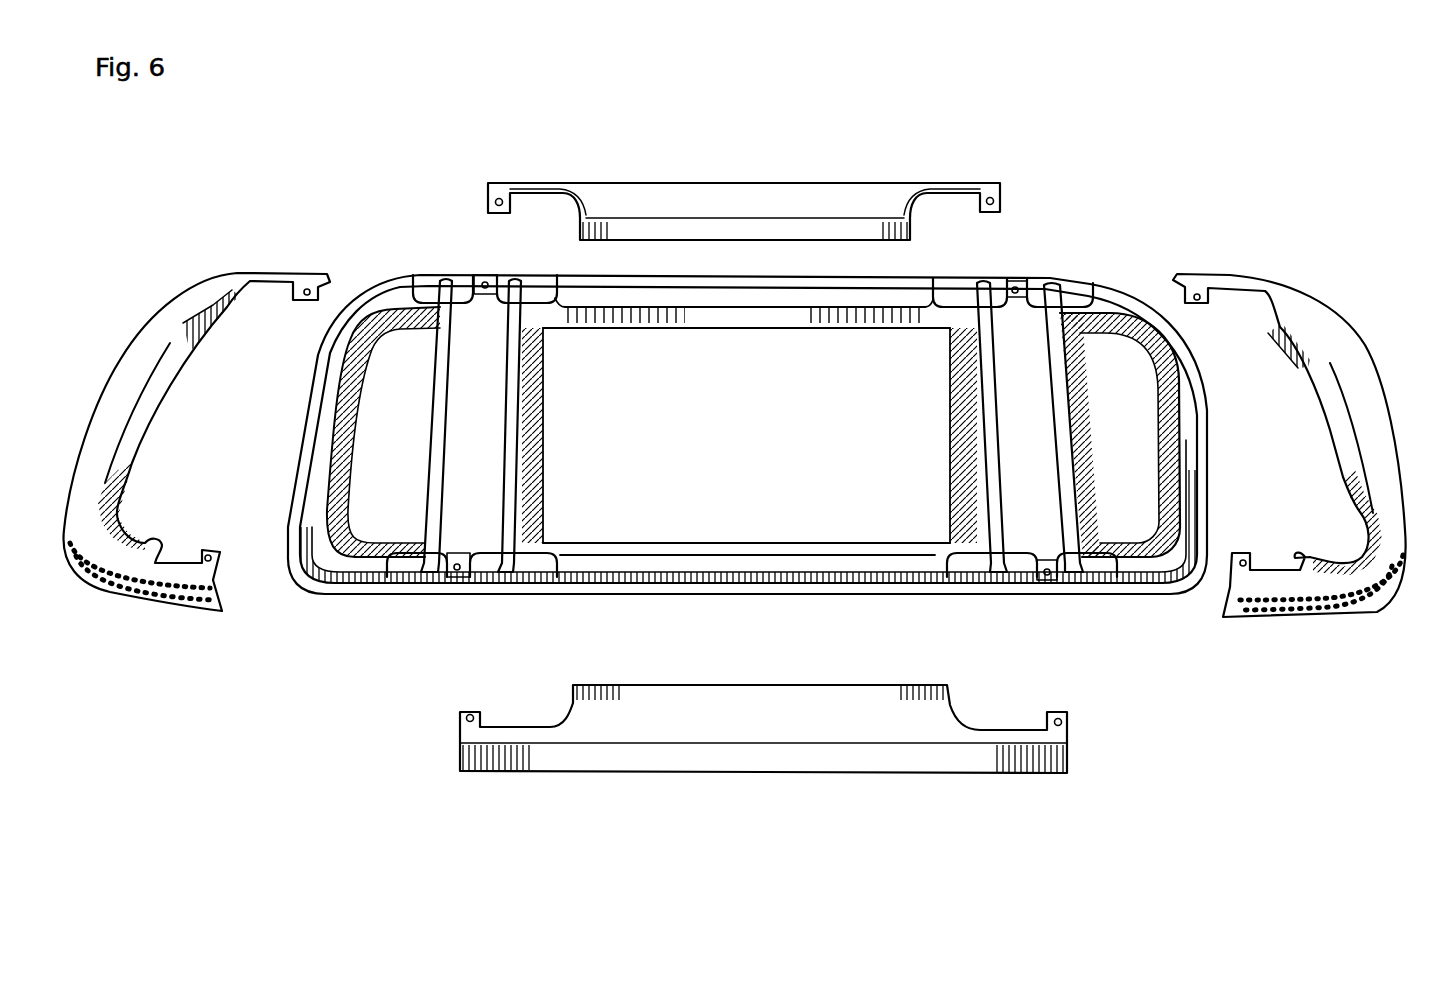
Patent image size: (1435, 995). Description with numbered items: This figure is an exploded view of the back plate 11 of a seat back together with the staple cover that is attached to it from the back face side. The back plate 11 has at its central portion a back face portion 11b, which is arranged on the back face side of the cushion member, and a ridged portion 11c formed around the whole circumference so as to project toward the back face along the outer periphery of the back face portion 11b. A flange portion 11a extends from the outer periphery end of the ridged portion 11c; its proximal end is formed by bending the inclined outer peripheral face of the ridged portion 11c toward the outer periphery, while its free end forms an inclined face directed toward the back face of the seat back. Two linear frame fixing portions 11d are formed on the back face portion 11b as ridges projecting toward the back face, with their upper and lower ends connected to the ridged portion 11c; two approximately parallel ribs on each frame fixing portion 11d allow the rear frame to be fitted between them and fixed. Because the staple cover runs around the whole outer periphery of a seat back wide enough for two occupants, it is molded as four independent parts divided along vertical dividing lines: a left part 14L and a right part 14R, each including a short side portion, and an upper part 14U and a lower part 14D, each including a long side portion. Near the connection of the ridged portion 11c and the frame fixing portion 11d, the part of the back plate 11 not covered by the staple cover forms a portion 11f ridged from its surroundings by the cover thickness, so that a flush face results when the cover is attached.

The back plate 11 is at (399, 262).
The flange portion 11a is at (343, 590).
The back face portion 11b is at (866, 368).
The ridged portion 11c is at (308, 510).
The frame fixing portion 11d is at (1028, 388).
The ridged portion not covered with the staple cover 11f is at (1097, 570).
The upper part 14U is at (802, 180).
The lower part 14D is at (808, 774).
The left part 14L is at (196, 277).
The right part 14R is at (1302, 286).